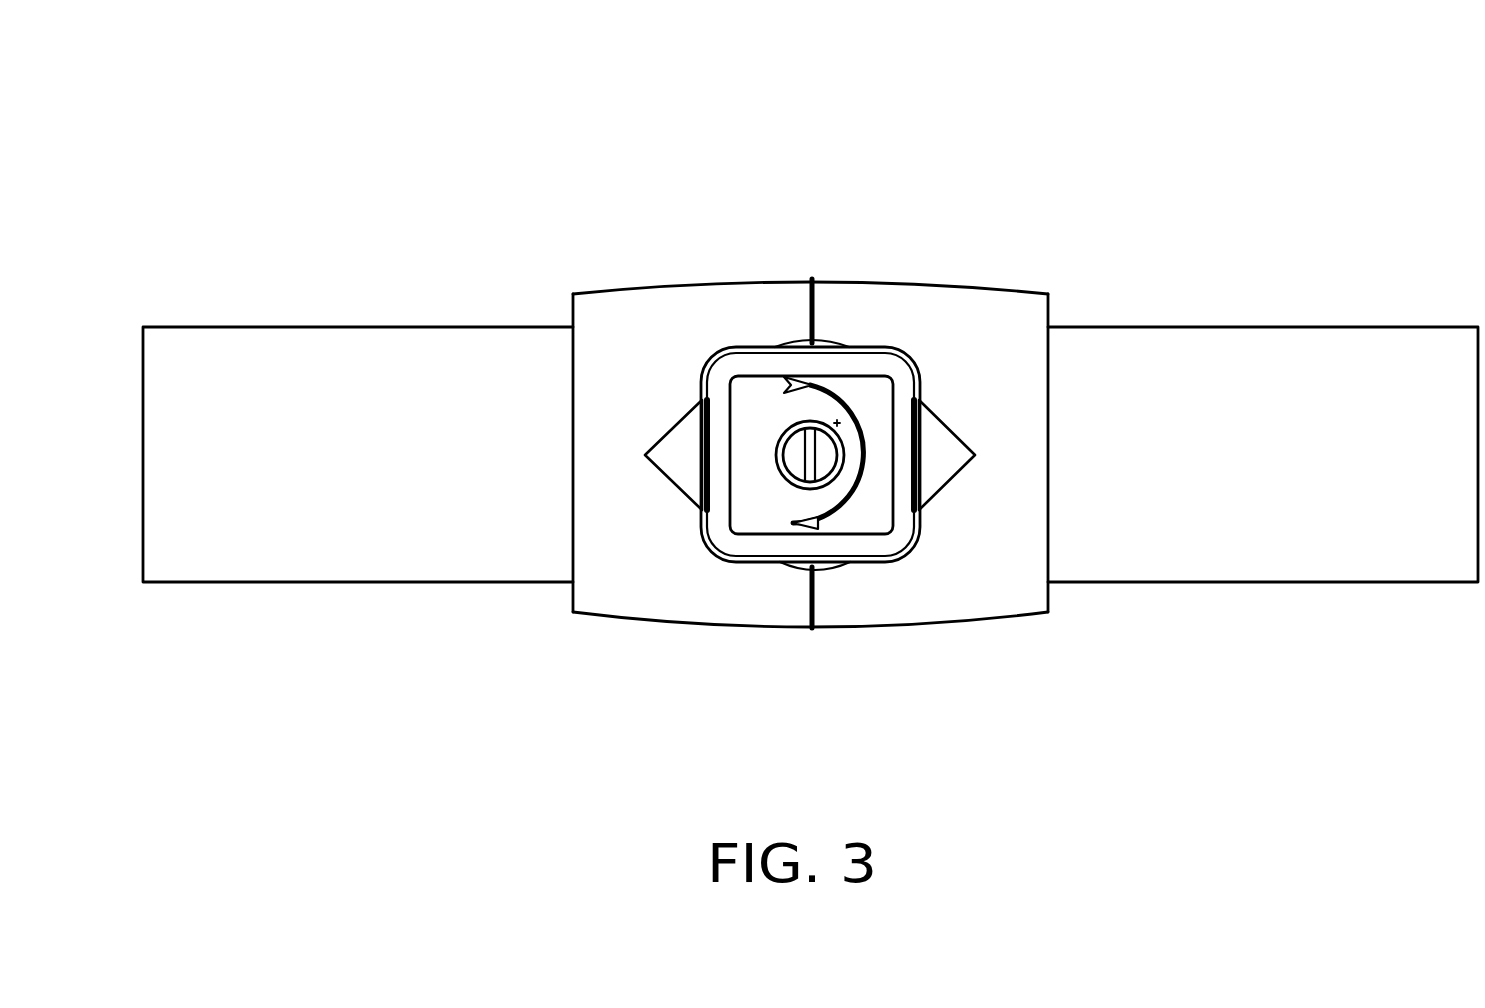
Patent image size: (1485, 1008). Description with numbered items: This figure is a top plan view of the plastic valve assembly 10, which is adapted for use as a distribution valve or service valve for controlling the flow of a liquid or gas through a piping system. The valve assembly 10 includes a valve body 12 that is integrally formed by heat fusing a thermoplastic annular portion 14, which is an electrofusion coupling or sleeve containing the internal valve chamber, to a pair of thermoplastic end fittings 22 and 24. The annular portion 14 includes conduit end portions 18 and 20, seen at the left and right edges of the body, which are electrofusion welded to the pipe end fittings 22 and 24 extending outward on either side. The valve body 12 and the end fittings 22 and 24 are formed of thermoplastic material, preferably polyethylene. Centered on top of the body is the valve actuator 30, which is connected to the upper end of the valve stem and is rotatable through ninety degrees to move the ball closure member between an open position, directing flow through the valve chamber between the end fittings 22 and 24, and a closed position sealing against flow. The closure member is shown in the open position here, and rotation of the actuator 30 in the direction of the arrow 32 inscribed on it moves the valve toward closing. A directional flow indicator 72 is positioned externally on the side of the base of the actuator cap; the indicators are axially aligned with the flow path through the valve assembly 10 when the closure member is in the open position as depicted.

The plastic valve assembly 10 is at (513, 177).
The valve body 12 is at (988, 237).
The thermoplastic annular portion 14 is at (777, 297).
The conduit end portion 18 is at (573, 294).
The conduit end portion 20 is at (1040, 293).
The end fitting 22 is at (302, 348).
The end fitting 24 is at (1218, 353).
The valve actuator 30 is at (682, 565).
The arrow 32 is at (867, 500).
The directional flow indicator 72 is at (945, 448).